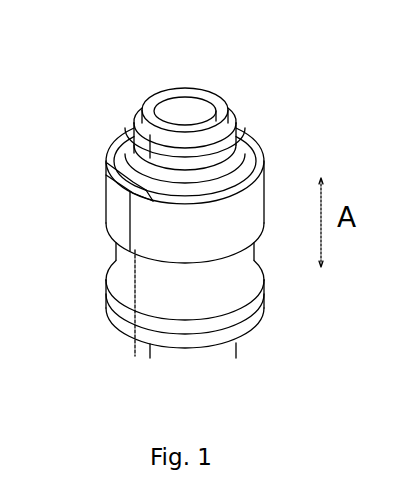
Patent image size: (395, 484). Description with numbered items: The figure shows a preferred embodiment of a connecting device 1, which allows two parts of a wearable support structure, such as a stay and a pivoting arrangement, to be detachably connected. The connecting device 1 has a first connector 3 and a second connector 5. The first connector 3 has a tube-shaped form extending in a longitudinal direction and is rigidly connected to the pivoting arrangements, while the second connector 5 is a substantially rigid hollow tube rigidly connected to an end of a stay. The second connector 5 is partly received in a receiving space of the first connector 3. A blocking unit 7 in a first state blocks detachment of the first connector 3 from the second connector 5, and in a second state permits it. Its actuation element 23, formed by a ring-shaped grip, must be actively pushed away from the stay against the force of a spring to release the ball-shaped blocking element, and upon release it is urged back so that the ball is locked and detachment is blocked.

The connecting device 1 is at (39, 76).
The first connector 3 is at (236, 343).
The second connector 5 is at (153, 95).
The blocking unit 7 is at (83, 218).
The actuation element 23 is at (112, 196).